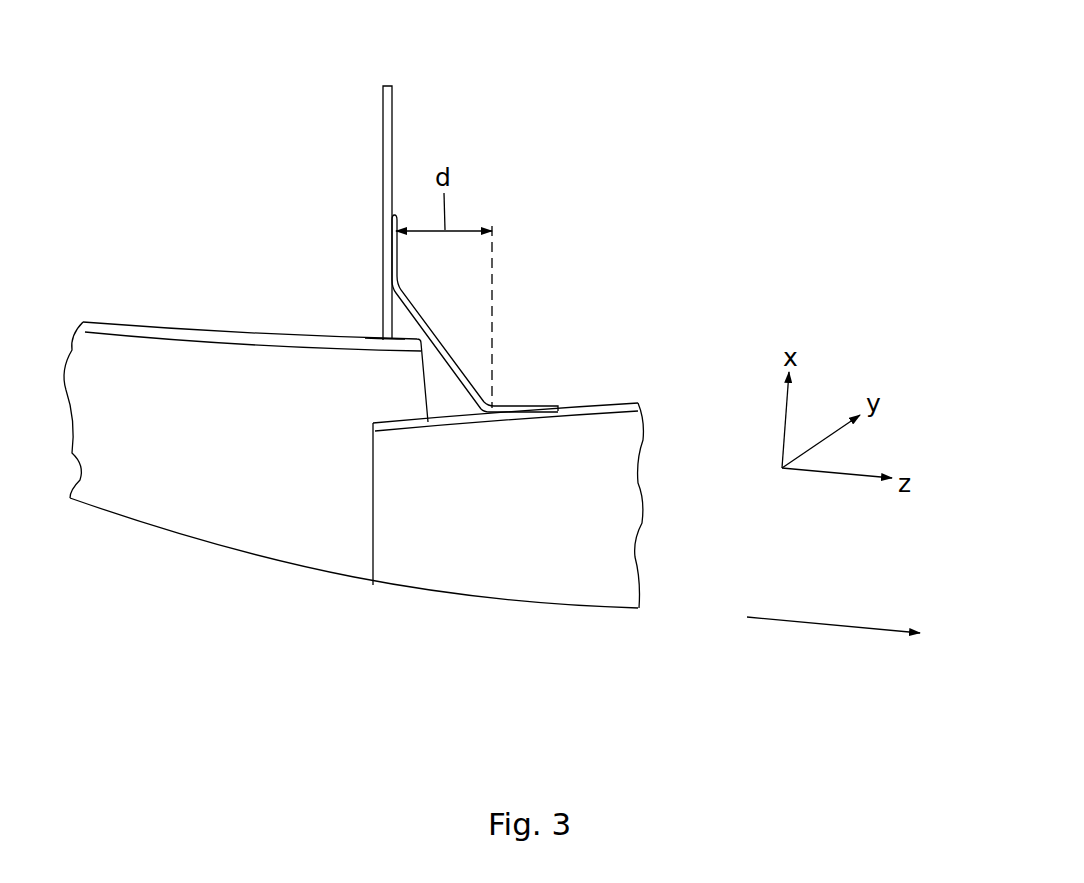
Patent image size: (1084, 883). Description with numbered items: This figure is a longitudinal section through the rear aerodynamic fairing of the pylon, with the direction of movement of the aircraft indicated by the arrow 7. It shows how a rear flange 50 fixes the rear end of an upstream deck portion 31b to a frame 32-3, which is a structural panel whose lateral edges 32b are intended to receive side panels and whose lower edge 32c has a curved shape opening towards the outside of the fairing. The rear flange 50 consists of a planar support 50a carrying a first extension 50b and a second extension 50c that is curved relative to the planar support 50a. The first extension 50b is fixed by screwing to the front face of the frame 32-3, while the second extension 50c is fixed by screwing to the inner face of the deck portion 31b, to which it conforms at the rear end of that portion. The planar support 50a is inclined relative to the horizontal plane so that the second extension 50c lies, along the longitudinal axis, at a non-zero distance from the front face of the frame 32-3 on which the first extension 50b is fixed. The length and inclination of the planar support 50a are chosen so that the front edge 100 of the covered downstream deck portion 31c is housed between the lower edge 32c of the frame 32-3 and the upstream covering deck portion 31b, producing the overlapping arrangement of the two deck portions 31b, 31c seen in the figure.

The arrow 7 is at (800, 618).
The deck portion 31b is at (478, 563).
The deck portion 31c is at (202, 493).
The frame 32-3 is at (378, 174).
The lateral edge 32b is at (387, 167).
The lower edge 32c is at (384, 337).
The rear flange 50 is at (420, 291).
The planar support 50a is at (448, 355).
The first extension 50b is at (393, 252).
The second extension 50c is at (524, 404).
The front edge 100 is at (380, 341).